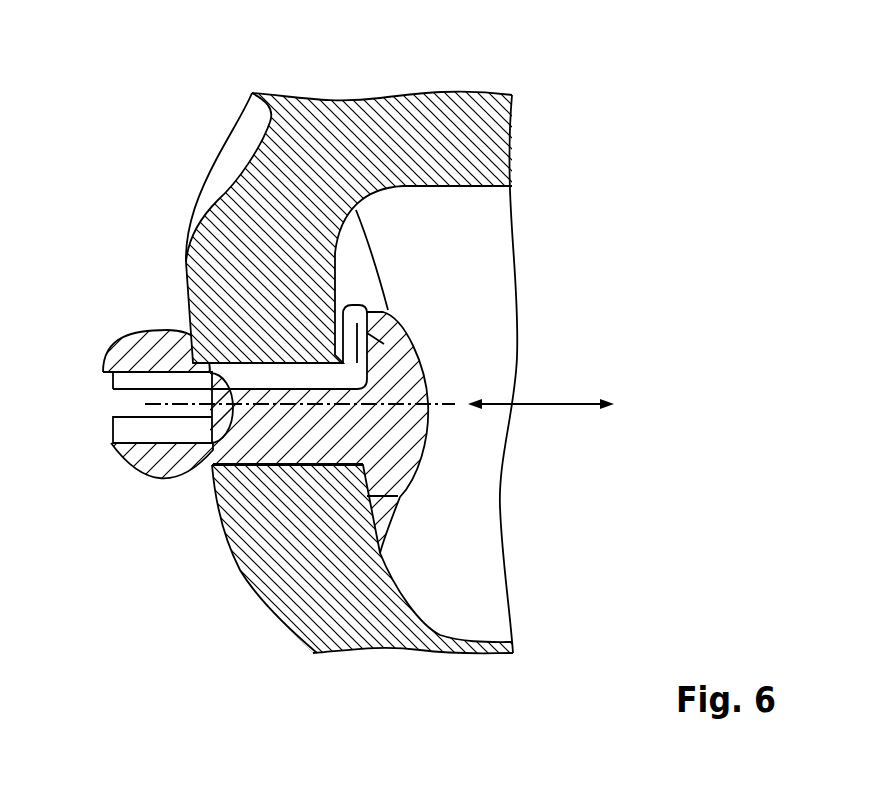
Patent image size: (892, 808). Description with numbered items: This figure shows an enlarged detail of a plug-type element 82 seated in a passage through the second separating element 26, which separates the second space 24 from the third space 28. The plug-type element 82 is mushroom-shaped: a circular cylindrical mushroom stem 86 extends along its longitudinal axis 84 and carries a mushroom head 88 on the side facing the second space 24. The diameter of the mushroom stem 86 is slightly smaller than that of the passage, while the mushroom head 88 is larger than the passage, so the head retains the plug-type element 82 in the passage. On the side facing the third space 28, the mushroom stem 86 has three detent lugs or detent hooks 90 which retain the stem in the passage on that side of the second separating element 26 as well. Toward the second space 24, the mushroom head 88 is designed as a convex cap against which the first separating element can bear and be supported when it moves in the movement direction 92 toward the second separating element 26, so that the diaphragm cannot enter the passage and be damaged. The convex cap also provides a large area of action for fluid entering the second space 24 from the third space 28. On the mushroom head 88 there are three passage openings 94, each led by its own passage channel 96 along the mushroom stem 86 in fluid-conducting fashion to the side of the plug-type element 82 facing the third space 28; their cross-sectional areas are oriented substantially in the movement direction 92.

The second space 24 is at (442, 231).
The second separating element 26 is at (448, 112).
The third space 28 is at (180, 500).
The plug-type element 82 is at (241, 337).
The longitudinal axis 84 is at (453, 404).
The mushroom stem 86 is at (275, 440).
The mushroom head 88 is at (405, 460).
The detent hooks 90 is at (157, 458).
The movement direction 92 is at (557, 404).
The passage openings 94 is at (358, 323).
The passage channel 96 is at (238, 378).